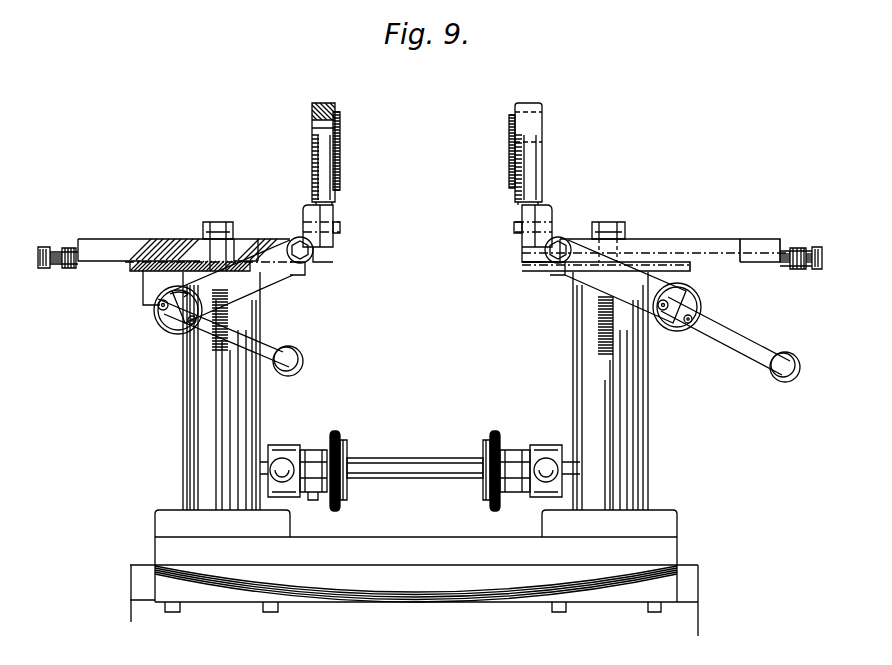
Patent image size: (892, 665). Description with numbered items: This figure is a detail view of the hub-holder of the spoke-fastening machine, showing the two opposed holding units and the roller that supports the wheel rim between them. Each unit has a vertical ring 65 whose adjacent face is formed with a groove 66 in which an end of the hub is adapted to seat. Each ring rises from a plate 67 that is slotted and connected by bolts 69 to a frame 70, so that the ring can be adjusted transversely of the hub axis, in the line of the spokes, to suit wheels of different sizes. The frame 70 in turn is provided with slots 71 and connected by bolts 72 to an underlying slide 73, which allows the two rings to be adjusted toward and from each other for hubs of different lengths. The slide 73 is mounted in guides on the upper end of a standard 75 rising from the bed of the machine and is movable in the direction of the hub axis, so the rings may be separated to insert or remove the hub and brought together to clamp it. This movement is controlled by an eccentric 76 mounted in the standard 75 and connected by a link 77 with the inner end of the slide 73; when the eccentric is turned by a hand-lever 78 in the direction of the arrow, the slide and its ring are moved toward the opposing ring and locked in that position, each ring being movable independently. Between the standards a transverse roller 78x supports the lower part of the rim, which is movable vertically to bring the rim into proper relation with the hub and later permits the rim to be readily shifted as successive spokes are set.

The vertical ring 65 is at (428, 154).
The groove 66 is at (343, 131).
The plate 67 is at (328, 212).
The bolt 69 is at (341, 229).
The frame 70 is at (178, 250).
The slot 71 is at (242, 243).
The bolt 72 is at (226, 220).
The slide 73 is at (137, 271).
The standard 75 is at (395, 390).
The eccentric 76 is at (168, 323).
The link 77 is at (265, 280).
The hand-lever 78 is at (479, 339).
The transverse roller 78x is at (338, 442).